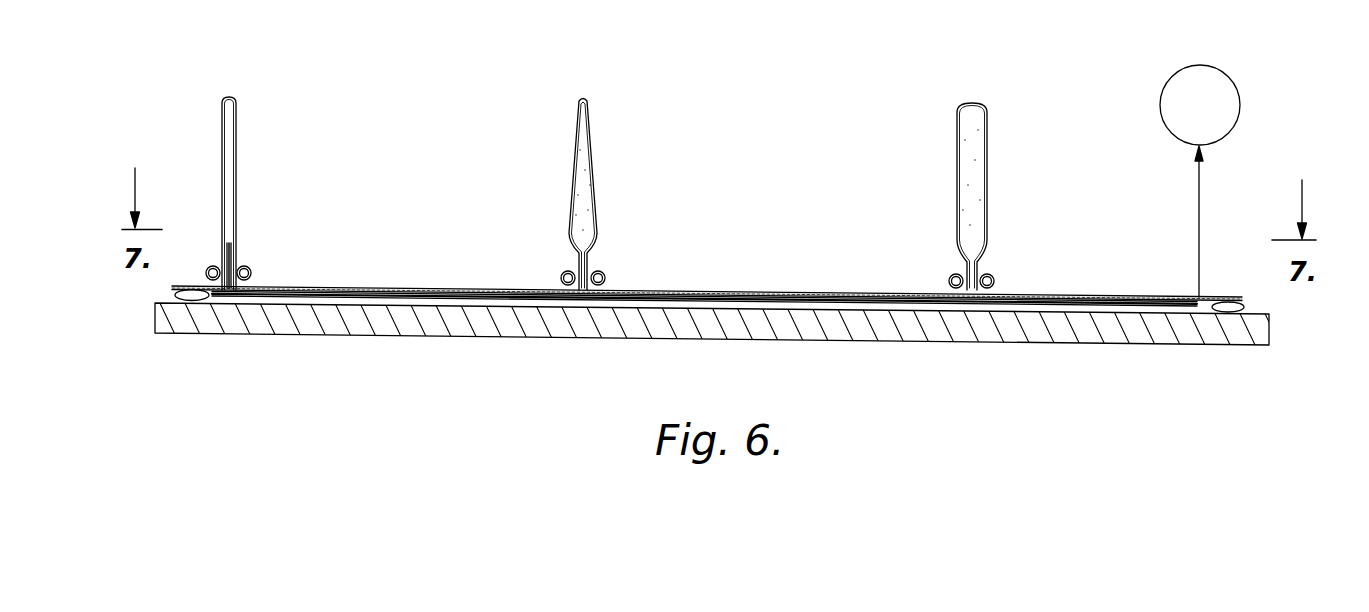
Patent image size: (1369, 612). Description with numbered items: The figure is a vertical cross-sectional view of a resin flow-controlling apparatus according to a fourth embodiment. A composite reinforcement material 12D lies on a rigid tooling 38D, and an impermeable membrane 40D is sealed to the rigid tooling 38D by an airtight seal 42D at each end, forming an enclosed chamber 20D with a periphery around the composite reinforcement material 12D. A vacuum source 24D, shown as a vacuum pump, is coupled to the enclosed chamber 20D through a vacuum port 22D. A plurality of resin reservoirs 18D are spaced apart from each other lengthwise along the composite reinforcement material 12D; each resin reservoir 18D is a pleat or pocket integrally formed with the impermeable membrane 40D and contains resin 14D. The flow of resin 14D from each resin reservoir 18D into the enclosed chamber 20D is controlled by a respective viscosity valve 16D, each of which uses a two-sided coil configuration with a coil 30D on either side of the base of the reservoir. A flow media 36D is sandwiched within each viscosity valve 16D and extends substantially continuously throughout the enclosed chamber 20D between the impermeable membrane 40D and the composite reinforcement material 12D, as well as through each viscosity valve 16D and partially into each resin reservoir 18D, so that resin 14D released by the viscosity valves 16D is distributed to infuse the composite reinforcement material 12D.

The composite reinforcement material 12D is at (358, 300).
The resin 14D is at (585, 170).
The viscosity valve 16D is at (251, 275).
The resin reservoir 18D is at (238, 116).
The enclosed chamber 20D is at (493, 300).
The vacuum port 22D is at (1200, 297).
The vacuum source 24D is at (1180, 70).
The coil 30D is at (212, 265).
The flow media 36D is at (233, 250).
The rigid tooling 38D is at (937, 335).
The impermeable membrane 40D is at (860, 295).
The airtight seal 42D is at (178, 296).